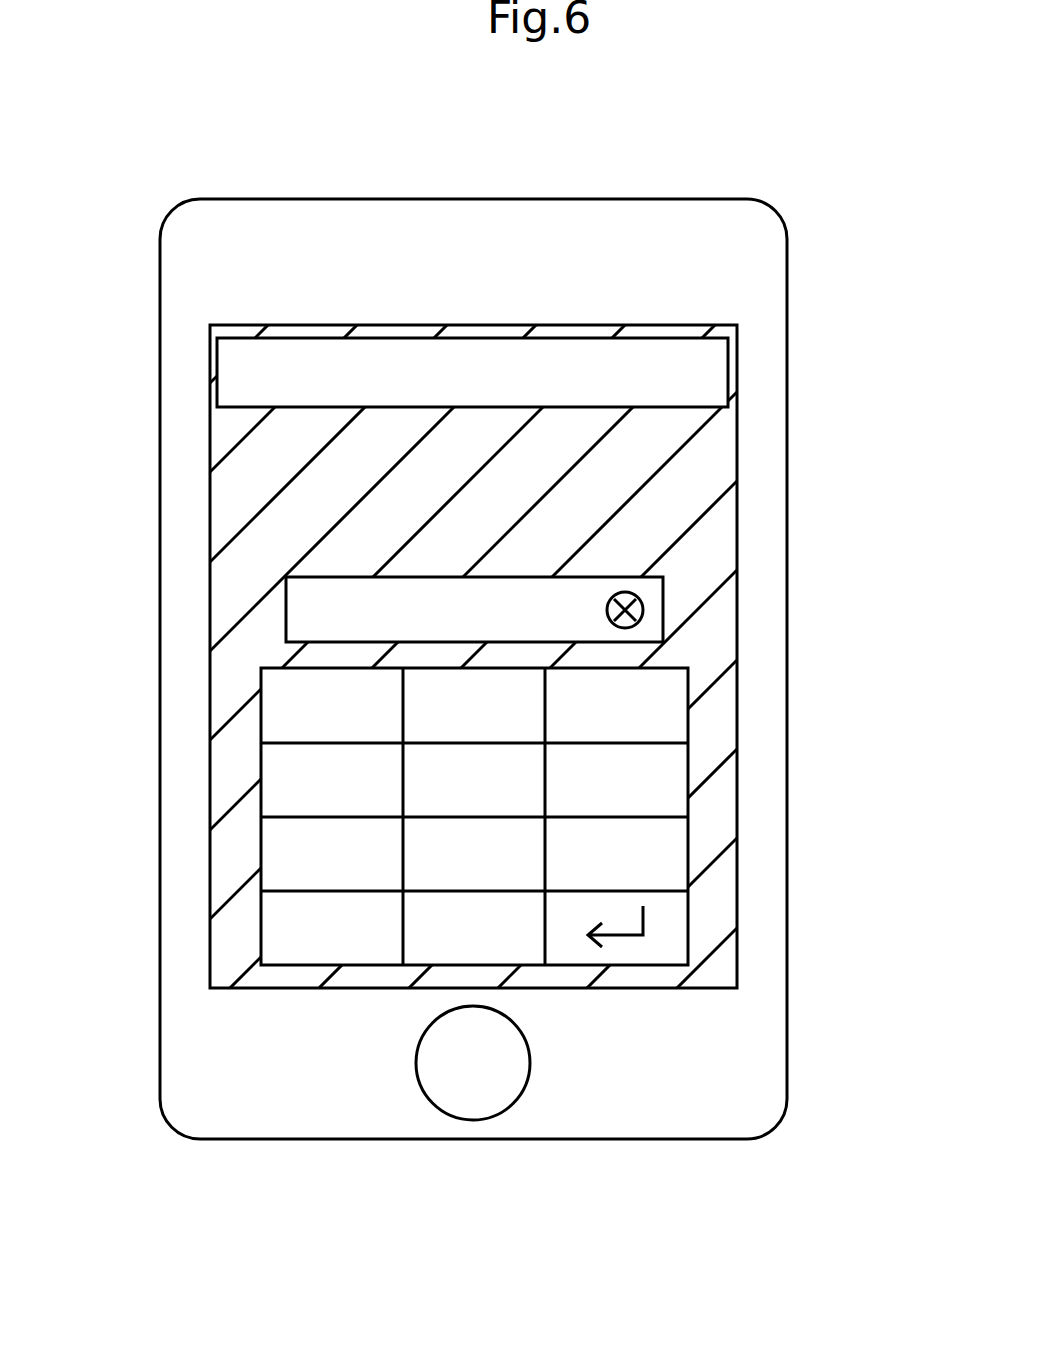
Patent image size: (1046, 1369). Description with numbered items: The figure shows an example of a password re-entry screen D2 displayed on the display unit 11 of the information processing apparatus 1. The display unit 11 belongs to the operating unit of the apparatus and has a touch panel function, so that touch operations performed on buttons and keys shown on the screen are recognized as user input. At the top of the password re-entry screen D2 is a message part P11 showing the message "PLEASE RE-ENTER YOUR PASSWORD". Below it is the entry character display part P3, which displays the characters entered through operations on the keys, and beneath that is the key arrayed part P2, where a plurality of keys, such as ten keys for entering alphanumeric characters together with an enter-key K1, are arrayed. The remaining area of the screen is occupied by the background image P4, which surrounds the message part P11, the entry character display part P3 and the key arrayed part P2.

The information processing apparatus 1 is at (302, 1209).
The display unit 11 is at (735, 582).
The password re-entry screen D2 is at (523, 684).
The message part P11 is at (262, 408).
The entry character display part P3 is at (287, 610).
The key arrayed part P2 is at (471, 816).
The background image P4 is at (717, 725).
The enter-key K1 is at (668, 930).